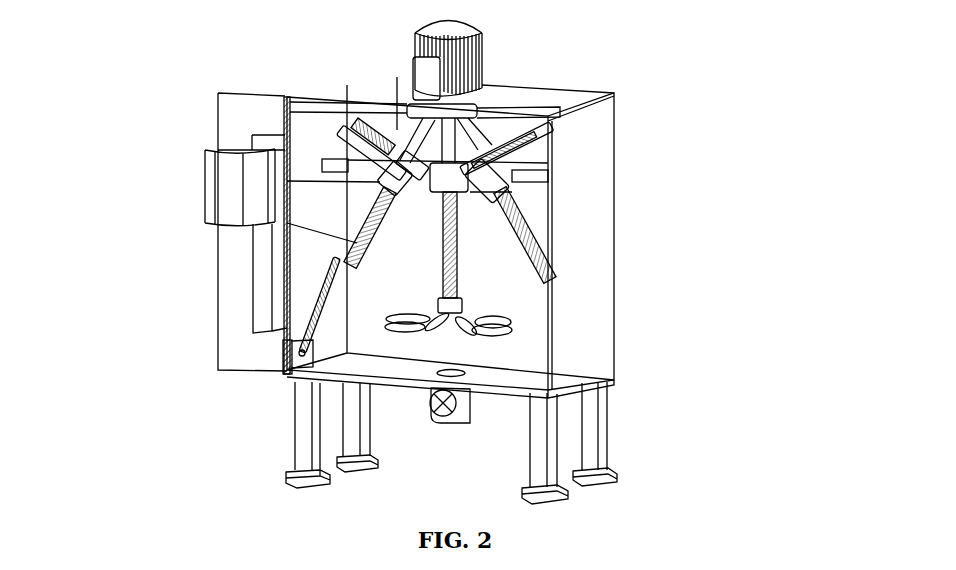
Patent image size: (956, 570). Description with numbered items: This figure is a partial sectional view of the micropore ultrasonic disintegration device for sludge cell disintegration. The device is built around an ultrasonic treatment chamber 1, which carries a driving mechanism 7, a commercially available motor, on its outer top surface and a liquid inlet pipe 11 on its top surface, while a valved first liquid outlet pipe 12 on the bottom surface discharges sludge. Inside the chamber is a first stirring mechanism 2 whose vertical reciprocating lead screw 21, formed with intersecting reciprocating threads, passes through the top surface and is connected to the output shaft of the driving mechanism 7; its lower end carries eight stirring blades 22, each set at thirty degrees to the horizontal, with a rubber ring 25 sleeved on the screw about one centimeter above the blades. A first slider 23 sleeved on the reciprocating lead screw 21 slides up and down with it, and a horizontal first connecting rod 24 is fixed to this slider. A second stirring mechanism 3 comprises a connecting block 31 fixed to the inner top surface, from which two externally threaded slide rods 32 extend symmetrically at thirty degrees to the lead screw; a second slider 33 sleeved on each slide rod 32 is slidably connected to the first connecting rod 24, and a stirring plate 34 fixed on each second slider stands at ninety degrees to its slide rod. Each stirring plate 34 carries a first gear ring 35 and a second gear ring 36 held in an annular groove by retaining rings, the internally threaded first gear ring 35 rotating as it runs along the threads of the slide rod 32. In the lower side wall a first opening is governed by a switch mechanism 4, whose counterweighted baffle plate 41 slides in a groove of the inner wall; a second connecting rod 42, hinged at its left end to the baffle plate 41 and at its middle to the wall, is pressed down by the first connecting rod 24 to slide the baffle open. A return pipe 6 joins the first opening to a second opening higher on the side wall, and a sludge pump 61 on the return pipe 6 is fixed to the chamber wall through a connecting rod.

The ultrasonic treatment chamber 1 is at (352, 96).
The first stirring mechanism 2 is at (460, 300).
The second stirring mechanism 3 is at (525, 160).
The switch mechanism 4 is at (290, 373).
The return pipe 6 is at (240, 119).
The driving mechanism 7 is at (483, 50).
The liquid inlet pipe 11 is at (440, 88).
The first liquid outlet pipe 12 is at (470, 410).
The reciprocating lead screw 21 is at (455, 285).
The stirring blades 22 is at (505, 320).
The first slider 23 is at (458, 200).
The first connecting rod 24 is at (330, 162).
The rubber ring 25 is at (490, 338).
The connecting block 31 is at (520, 108).
The slide rod 32 is at (207, 223).
The second slider 33 is at (340, 181).
The stirring plate 34 is at (363, 113).
The first gear ring 35 is at (411, 114).
The second gear ring 36 is at (377, 120).
The baffle plate 41 is at (287, 351).
The second connecting rod 42 is at (313, 317).
The sludge pump 61 is at (228, 267).